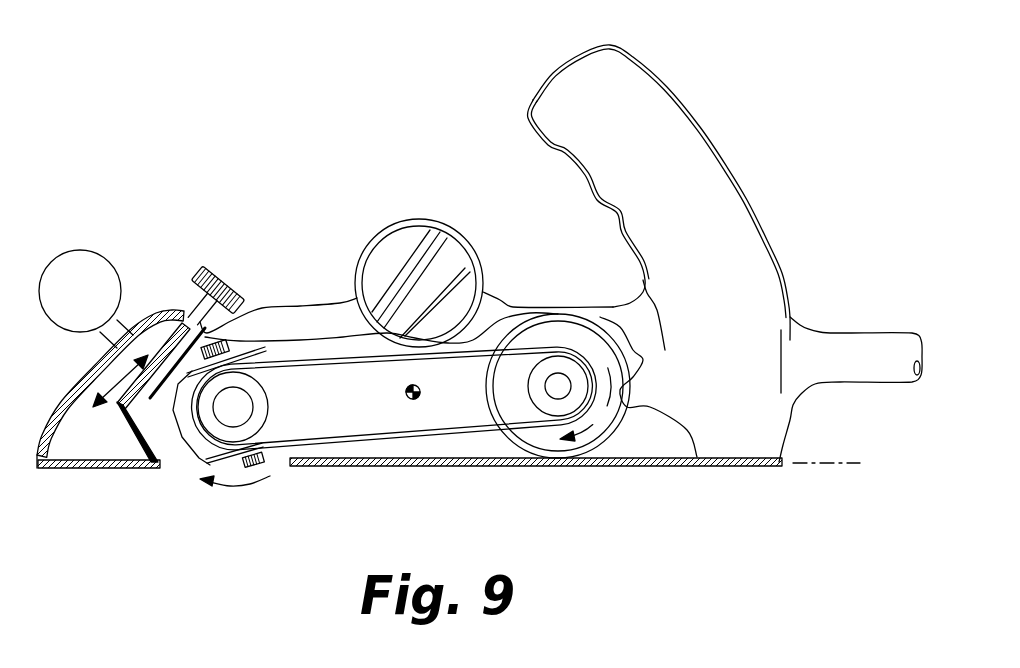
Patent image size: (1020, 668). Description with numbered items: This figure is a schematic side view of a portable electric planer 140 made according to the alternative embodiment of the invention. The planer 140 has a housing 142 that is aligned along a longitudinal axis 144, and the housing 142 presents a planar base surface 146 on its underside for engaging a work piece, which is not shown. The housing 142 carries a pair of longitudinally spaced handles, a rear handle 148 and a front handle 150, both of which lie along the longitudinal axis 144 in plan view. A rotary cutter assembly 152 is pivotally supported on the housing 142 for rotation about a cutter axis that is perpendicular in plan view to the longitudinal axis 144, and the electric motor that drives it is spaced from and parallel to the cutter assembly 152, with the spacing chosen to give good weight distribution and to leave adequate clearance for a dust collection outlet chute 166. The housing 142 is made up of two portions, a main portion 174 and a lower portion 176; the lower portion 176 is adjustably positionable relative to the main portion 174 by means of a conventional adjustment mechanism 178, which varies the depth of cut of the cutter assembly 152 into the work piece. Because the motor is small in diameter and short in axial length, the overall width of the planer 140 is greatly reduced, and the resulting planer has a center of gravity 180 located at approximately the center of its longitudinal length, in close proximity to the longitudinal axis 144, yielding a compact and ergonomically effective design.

The portable electric planer 140 is at (365, 104).
The housing 142 is at (291, 306).
The longitudinal axis 144 is at (843, 463).
The planar base surface 146 is at (632, 467).
The rear handle 148 is at (720, 147).
The front handle 150 is at (88, 250).
The rotary cutter assembly 152 is at (187, 463).
The dust collection outlet chute 166 is at (480, 250).
The main portion 174 is at (473, 450).
The lower portion 176 is at (92, 443).
The adjustment mechanism 178 is at (187, 267).
The center of gravity 180 is at (407, 390).